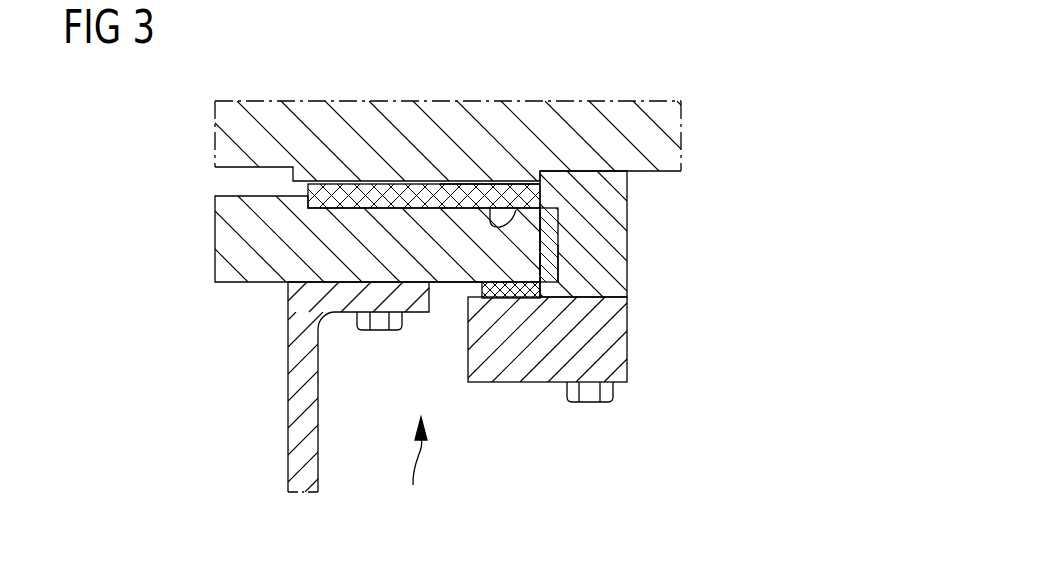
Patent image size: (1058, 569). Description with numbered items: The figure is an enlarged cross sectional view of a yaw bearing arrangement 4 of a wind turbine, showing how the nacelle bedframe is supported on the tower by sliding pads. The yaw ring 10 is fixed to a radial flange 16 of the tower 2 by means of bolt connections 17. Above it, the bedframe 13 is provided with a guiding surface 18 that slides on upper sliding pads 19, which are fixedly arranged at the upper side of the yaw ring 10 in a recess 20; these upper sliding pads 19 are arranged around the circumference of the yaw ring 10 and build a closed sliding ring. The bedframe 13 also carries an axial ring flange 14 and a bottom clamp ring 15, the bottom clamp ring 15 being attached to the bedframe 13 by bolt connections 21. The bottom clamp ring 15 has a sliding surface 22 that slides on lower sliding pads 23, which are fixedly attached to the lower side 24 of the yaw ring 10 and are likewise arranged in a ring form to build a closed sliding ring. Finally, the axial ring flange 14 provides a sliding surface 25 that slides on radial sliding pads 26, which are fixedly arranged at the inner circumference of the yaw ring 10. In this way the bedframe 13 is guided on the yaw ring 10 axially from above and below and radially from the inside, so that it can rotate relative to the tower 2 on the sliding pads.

The tower 2 is at (297, 412).
The yaw bearing arrangement 4 is at (416, 466).
The yaw ring 10 is at (225, 257).
The bedframe 13 is at (314, 108).
The axial ring flange 14 is at (617, 210).
The bottom clamp ring 15 is at (617, 353).
The radial flange 16 is at (383, 302).
The bolt connections 17 is at (375, 322).
The guiding surface 18 is at (382, 183).
The upper sliding pads 19 is at (458, 200).
The recess 20 is at (514, 215).
The bolt connections 21 is at (590, 403).
The sliding surface 22 is at (535, 287).
The lower sliding pads 23 is at (520, 290).
The lower side 24 is at (453, 283).
The sliding surface 25 is at (560, 217).
The radial sliding pads 26 is at (553, 248).